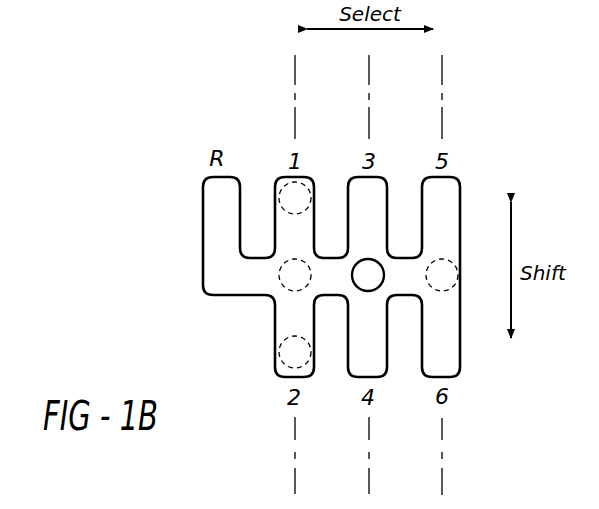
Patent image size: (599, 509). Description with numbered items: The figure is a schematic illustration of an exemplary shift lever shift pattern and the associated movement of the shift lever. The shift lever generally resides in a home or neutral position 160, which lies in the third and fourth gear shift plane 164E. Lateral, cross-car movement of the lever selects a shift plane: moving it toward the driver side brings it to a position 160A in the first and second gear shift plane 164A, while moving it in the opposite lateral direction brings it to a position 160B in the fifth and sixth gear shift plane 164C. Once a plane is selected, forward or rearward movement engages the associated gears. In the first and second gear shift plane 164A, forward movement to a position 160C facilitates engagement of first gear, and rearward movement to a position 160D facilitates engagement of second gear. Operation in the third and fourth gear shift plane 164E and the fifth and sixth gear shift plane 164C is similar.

The neutral position 160 is at (375, 260).
The position 160A is at (280, 281).
The position 160B is at (443, 291).
The position 160C is at (288, 181).
The position 160D is at (280, 345).
The first and second gear shift plane 164A is at (295, 482).
The fifth and sixth gear shift plane 164C is at (442, 484).
The third and fourth gear shift plane 164E is at (369, 483).